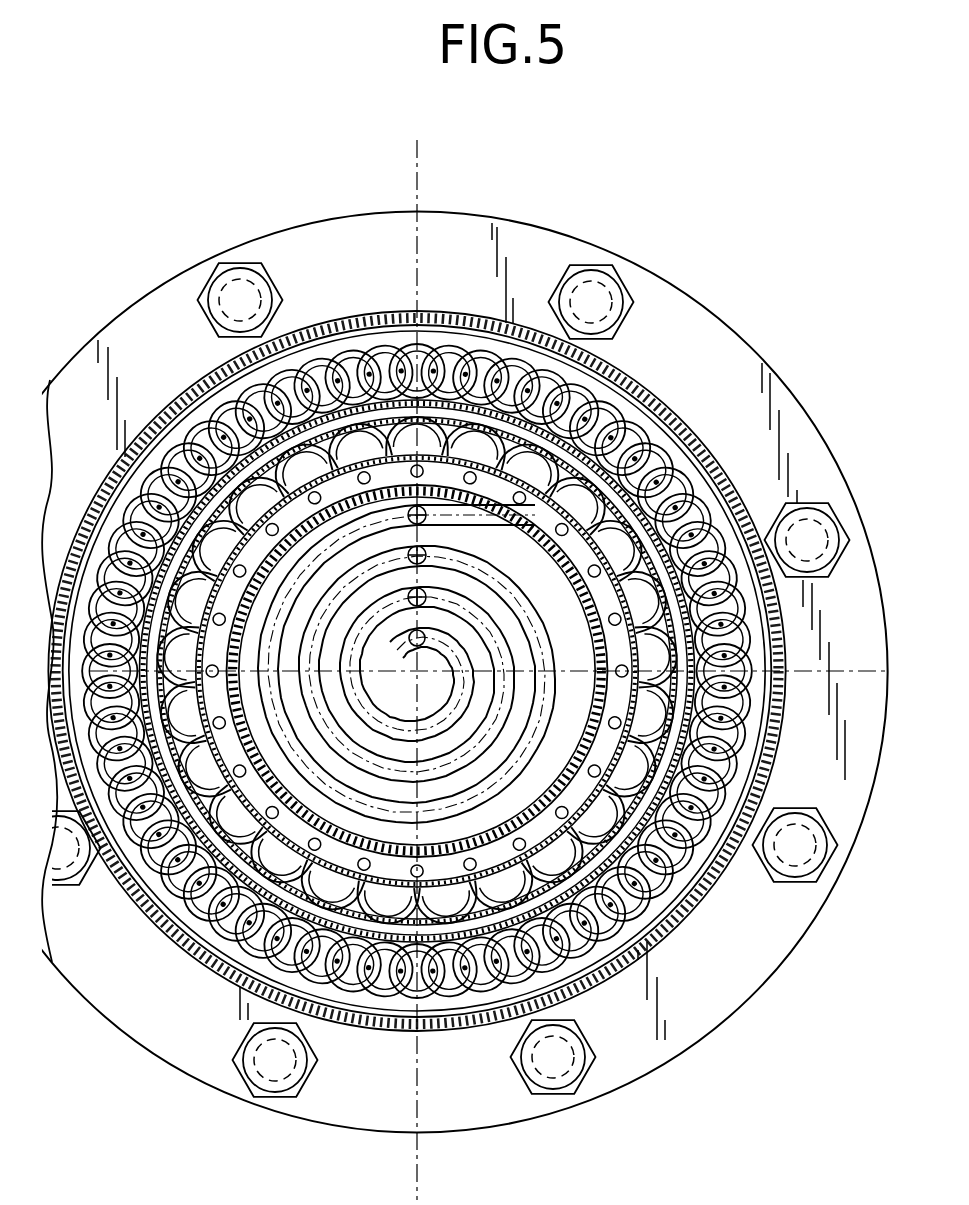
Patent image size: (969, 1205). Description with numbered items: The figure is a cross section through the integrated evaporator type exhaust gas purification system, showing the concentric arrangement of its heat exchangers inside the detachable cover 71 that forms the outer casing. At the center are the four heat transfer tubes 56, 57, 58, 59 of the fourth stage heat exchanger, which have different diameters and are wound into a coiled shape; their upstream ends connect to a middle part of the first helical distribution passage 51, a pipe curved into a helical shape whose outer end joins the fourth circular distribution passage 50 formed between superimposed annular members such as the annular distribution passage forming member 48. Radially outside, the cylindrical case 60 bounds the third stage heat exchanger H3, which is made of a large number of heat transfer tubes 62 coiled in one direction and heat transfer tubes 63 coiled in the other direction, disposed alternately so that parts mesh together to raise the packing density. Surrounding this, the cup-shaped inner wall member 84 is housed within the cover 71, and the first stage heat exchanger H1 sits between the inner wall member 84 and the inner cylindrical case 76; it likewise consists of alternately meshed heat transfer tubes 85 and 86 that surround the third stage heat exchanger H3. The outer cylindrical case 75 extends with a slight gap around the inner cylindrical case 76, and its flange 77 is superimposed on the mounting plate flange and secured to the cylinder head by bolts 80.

The annular distribution passage forming member 48 is at (587, 900).
The fourth circular distribution passage 50 is at (608, 636).
The first helical distribution passage 51 is at (540, 718).
The heat transfer tube 56 is at (430, 528).
The heat transfer tube 57 is at (416, 563).
The heat transfer tube 58 is at (453, 592).
The heat transfer tube 59 is at (423, 650).
The cylindrical case 60 is at (637, 927).
The heat transfer tube 62 is at (354, 918).
The heat transfer tube 63 is at (412, 920).
The detachable cover 71 is at (195, 394).
The cylindrical case 75 is at (700, 443).
The cylindrical case 76 is at (647, 440).
The flange 77 is at (459, 240).
The bolt 80 is at (590, 290).
The inner wall member 84 is at (575, 812).
The heat transfer tube 85 is at (155, 877).
The heat transfer tube 86 is at (183, 930).
The first stage heat exchanger H1 is at (372, 346).
The third stage heat exchanger H3 is at (462, 910).